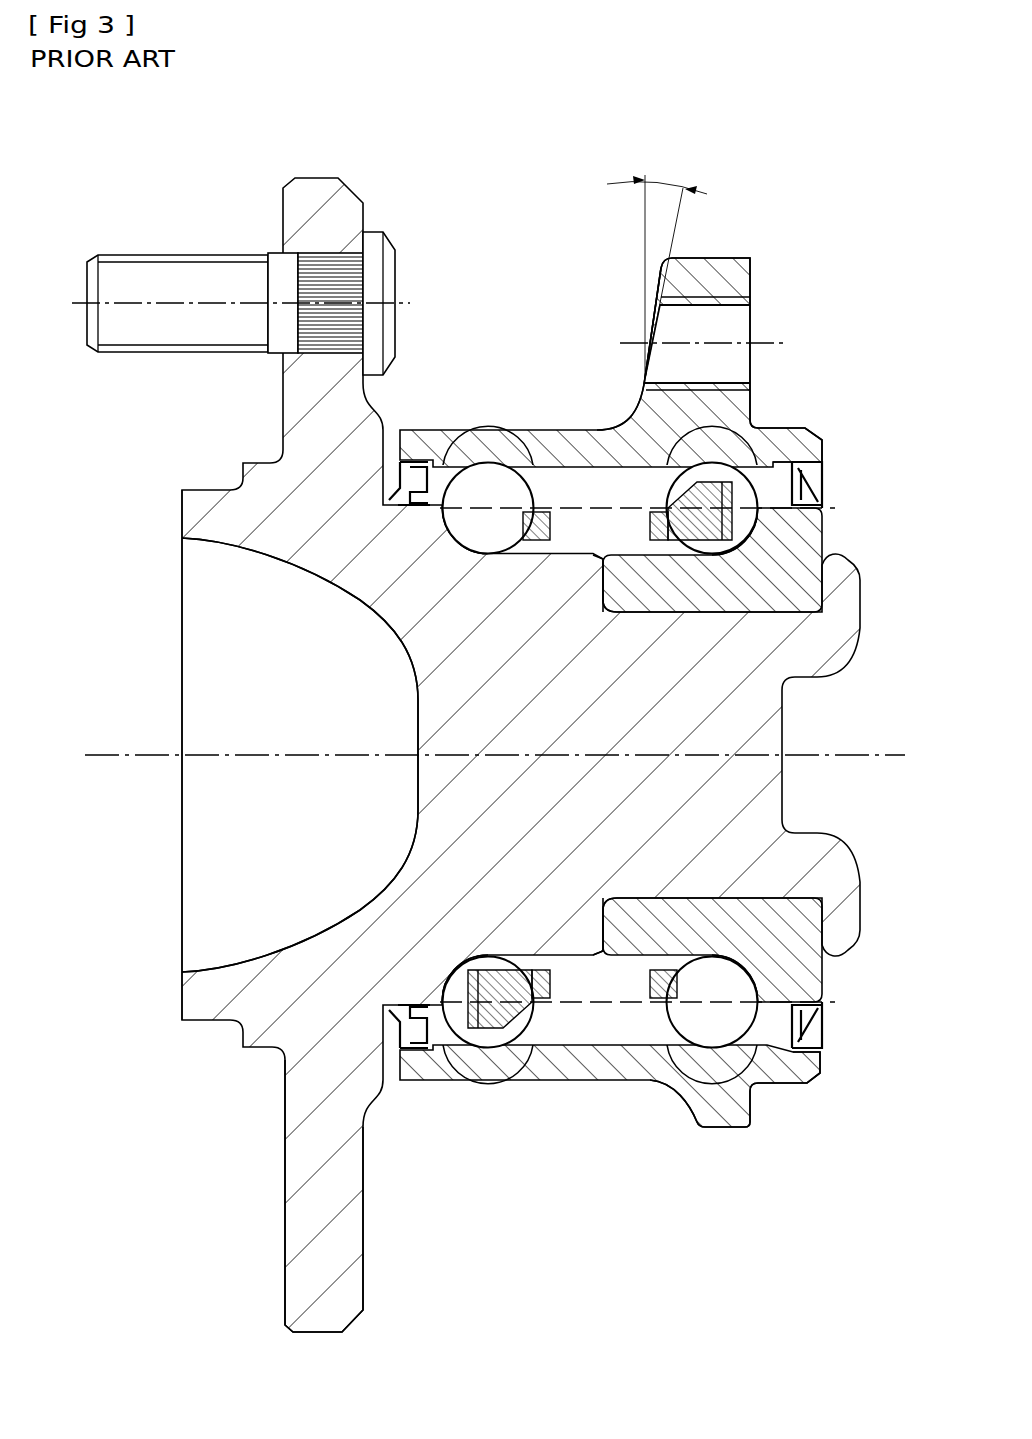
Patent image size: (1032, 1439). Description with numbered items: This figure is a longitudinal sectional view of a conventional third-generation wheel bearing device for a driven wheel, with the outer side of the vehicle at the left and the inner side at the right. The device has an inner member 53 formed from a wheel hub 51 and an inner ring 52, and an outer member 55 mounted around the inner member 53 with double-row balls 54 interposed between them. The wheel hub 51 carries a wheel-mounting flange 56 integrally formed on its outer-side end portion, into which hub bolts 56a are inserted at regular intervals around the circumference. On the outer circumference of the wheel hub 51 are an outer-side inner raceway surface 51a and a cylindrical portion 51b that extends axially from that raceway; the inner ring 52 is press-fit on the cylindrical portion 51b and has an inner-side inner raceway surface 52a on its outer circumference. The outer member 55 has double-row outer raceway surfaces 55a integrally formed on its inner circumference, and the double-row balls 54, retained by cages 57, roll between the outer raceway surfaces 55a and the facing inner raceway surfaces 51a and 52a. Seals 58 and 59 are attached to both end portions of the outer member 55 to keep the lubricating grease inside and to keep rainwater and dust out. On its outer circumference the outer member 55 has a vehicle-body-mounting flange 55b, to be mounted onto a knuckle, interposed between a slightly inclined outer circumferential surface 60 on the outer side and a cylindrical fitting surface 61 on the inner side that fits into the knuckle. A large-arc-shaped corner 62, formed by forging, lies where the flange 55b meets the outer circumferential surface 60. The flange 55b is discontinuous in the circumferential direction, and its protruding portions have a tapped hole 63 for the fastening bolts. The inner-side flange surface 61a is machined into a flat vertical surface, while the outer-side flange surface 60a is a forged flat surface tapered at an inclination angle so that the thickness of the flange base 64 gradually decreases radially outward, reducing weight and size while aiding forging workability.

The wheel hub 51 is at (305, 532).
The outer-side inner raceway surface 51a is at (483, 513).
The cylindrical portion 51b is at (650, 573).
The inner ring 52 is at (753, 755).
The inner-side inner raceway surface 52a is at (735, 520).
The inner member 53 is at (335, 590).
The double-row balls 54 is at (654, 678).
The outer member 55 is at (638, 309).
The double-row outer raceway surfaces 55a is at (490, 486).
The vehicle-body-mounting flange 55b is at (704, 298).
The wheel-mounting flange 56 is at (241, 241).
The hub bolts 56a is at (195, 290).
The cages 57 is at (660, 950).
The seal 58 is at (383, 1040).
The seal 59 is at (822, 1023).
The outer circumferential surface 60 is at (610, 1125).
The outer-side flange surface 60a is at (655, 323).
The cylindrical fitting surface 61 is at (787, 1085).
The inner-side flange surface 61a is at (752, 290).
The large-arc-shaped corner 62 is at (627, 425).
The tapped hole 63 is at (723, 307).
The flange base 64 is at (648, 380).